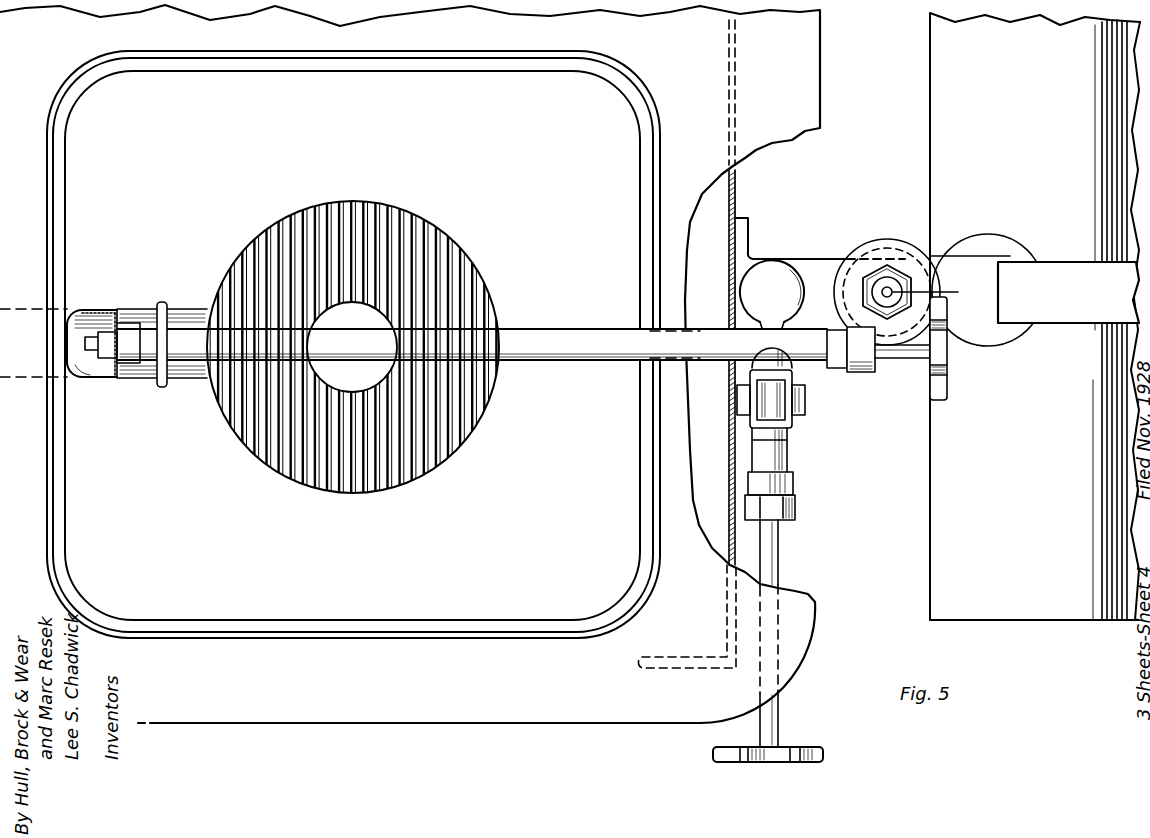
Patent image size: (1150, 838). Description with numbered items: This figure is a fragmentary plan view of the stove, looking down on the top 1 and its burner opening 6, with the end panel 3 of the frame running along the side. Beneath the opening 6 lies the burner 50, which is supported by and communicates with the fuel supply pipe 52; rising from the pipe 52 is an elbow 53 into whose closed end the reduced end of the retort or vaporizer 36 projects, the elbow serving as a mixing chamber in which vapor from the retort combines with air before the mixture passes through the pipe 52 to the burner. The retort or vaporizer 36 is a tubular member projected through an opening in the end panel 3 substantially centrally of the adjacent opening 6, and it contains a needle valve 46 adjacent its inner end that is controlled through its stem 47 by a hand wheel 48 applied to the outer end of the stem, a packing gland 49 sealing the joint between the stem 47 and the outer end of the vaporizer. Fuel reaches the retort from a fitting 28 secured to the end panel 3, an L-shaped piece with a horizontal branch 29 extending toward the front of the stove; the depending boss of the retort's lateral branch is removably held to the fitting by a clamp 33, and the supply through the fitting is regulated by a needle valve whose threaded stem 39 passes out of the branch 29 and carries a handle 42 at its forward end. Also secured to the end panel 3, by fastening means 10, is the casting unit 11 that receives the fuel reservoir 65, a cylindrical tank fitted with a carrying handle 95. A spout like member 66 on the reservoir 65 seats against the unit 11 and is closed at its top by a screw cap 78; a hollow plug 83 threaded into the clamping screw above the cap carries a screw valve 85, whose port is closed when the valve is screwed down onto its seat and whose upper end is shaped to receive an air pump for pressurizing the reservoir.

The top 1 is at (410, 364).
The end panel 3 is at (728, 418).
The burner opening 6 is at (602, 92).
The fastening means 10 is at (762, 238).
The unit 11 is at (745, 218).
The fitting 28 is at (774, 268).
The horizontal branch 29 is at (790, 458).
The clamp 33 is at (806, 405).
The retort or vaporizer 36 is at (556, 330).
The threaded stem 39 is at (780, 562).
The handle 42 is at (811, 745).
The needle valve 46 is at (85, 372).
The stem 47 is at (912, 359).
The hand wheel 48 is at (950, 385).
The packing gland 49 is at (856, 373).
The burner 50 is at (354, 202).
The fuel supply pipe 52 is at (150, 316).
The elbow 53 is at (104, 310).
The fuel reservoir 65 is at (1035, 316).
The spout like member 66 is at (974, 266).
The screw cap 78 is at (886, 248).
The hollow plug 83 is at (866, 280).
The screw valve 85 is at (939, 292).
The handle 95 is at (1068, 292).